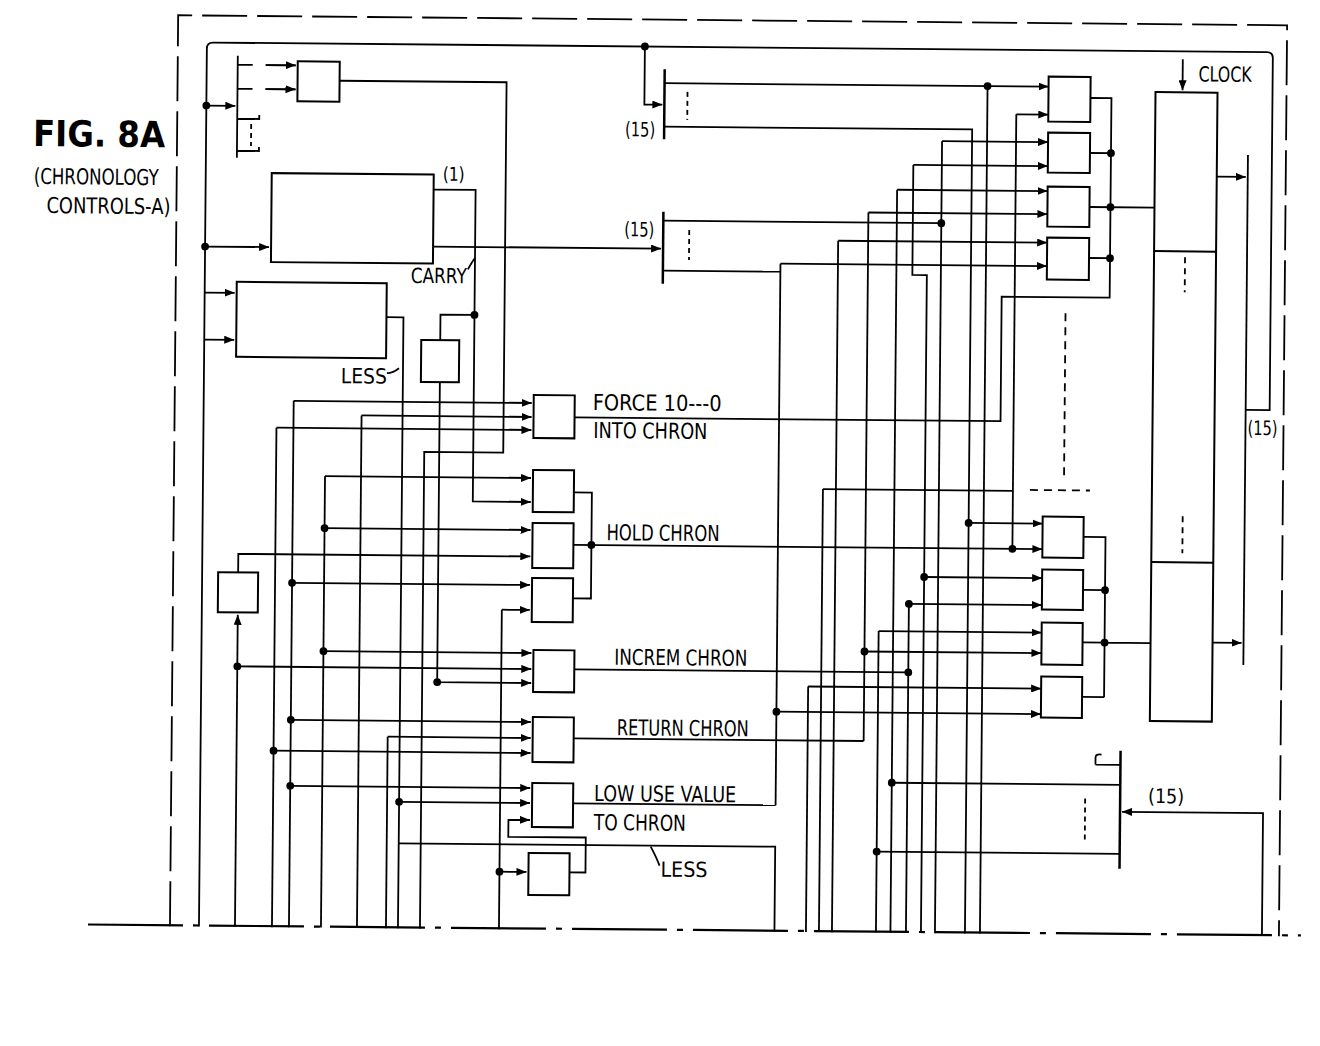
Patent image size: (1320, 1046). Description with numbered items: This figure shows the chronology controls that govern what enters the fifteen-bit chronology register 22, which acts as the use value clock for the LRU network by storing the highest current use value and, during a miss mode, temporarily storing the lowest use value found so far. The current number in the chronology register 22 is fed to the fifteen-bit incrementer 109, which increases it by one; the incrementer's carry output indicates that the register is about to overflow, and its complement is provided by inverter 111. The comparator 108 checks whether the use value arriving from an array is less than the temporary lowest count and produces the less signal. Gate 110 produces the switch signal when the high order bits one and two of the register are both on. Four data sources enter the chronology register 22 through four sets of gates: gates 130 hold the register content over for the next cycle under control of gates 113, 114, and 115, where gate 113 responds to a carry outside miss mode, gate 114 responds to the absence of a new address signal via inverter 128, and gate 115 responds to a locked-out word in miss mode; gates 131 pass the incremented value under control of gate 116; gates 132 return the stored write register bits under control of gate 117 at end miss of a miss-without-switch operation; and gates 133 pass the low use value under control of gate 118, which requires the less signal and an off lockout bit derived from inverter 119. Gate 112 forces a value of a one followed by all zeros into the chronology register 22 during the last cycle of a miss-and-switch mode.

The chronology register 22 is at (1212, 697).
The comparator 108 is at (276, 372).
The incrementer 109 is at (384, 176).
The gate 110 is at (334, 94).
The inverter 111 is at (434, 345).
The gate 112 is at (552, 394).
The gate 113 is at (560, 470).
The gate 114 is at (570, 532).
The gate 115 is at (573, 610).
The gate 116 is at (563, 656).
The gate 117 is at (570, 718).
The gate 118 is at (563, 792).
The inverter 119 is at (567, 888).
The inverter 128 is at (222, 573).
The gates 130 is at (1084, 84).
The gates 131 is at (1082, 136).
The gates 132 is at (1082, 194).
The gates 133 is at (1082, 246).